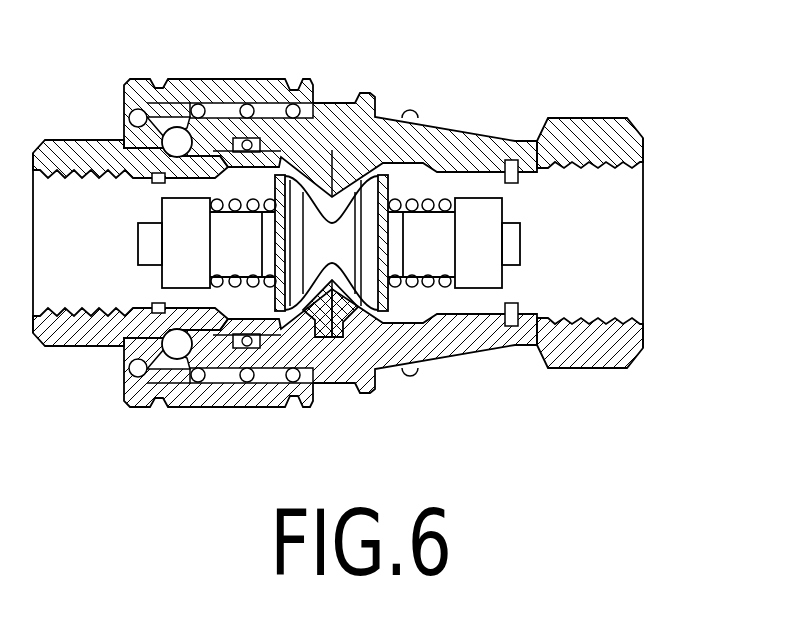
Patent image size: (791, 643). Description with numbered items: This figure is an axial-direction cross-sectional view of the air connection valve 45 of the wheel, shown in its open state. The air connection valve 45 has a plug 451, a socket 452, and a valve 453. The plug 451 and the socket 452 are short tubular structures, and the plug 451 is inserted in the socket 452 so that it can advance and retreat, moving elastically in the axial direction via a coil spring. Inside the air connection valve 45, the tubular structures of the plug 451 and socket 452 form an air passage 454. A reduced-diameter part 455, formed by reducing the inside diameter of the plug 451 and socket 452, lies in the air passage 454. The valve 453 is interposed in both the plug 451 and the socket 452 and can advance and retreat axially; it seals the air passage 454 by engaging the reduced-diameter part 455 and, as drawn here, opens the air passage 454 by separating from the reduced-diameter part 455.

The air connection valve 45 is at (530, 72).
The plug 451 is at (397, 120).
The socket 452 is at (70, 140).
The valve 453 is at (348, 290).
The air passage 454 is at (610, 220).
The reduced-diameter part 455 is at (348, 262).